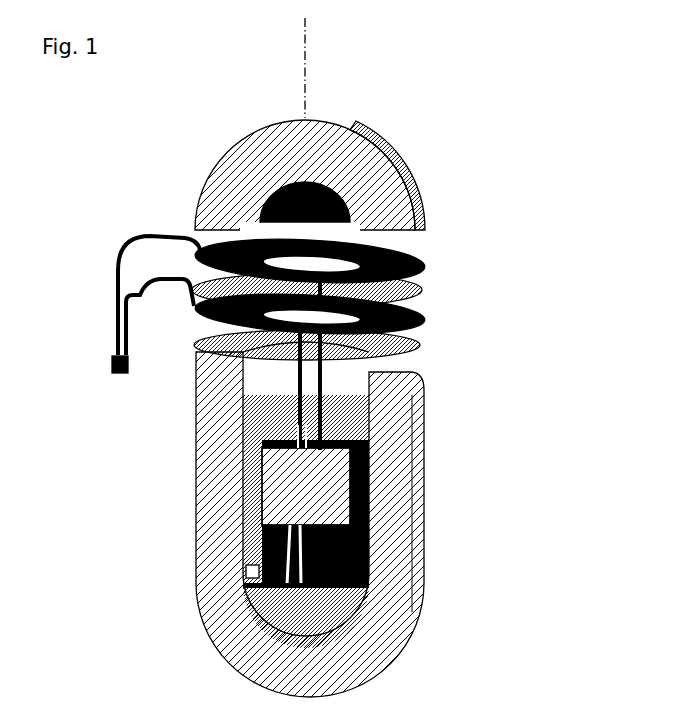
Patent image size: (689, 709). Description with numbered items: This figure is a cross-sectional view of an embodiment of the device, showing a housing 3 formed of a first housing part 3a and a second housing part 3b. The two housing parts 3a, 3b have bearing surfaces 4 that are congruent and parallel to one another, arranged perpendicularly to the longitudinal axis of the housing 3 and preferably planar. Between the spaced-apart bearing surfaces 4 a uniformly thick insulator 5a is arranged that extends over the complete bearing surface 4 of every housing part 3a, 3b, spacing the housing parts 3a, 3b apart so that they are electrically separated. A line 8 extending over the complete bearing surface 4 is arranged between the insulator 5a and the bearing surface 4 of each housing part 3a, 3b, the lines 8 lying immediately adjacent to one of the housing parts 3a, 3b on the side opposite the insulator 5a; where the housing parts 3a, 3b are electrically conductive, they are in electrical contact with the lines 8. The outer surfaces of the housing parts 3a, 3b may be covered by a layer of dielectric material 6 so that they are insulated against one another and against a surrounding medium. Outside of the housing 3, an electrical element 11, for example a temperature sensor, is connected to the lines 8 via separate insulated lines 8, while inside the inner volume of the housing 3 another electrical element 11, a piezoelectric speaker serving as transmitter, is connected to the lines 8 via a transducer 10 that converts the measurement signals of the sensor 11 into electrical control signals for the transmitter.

The housing 3 is at (423, 157).
The first housing part 3a is at (430, 548).
The second housing part 3b is at (418, 197).
The bearing surfaces 4 is at (420, 254).
The insulator 5a is at (428, 305).
The layer of dielectric material 6 is at (433, 450).
The line 8 is at (425, 271).
The transducer 10 is at (306, 486).
The electrical element 11 is at (120, 378).